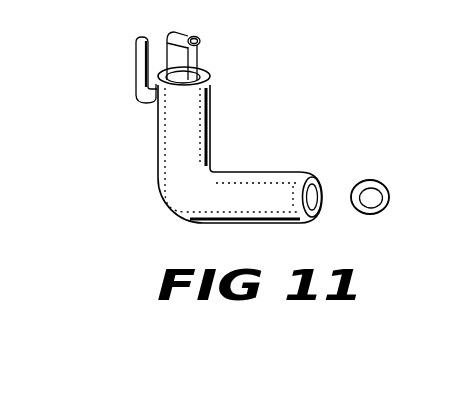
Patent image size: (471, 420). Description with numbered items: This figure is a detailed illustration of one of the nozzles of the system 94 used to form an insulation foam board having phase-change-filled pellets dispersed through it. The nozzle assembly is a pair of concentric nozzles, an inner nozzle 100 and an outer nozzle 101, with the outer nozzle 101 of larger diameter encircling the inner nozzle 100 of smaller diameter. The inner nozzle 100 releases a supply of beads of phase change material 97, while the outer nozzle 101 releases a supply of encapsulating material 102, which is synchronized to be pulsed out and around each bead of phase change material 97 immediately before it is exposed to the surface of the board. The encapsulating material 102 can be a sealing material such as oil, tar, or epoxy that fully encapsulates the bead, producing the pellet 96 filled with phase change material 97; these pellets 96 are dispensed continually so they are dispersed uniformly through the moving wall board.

The system 94 is at (133, 77).
The pellet 96 is at (371, 181).
The phase change material 97 is at (368, 204).
The inner nozzle 100 is at (204, 47).
The outer nozzle 101 is at (212, 101).
The encapsulating material 102 is at (389, 198).